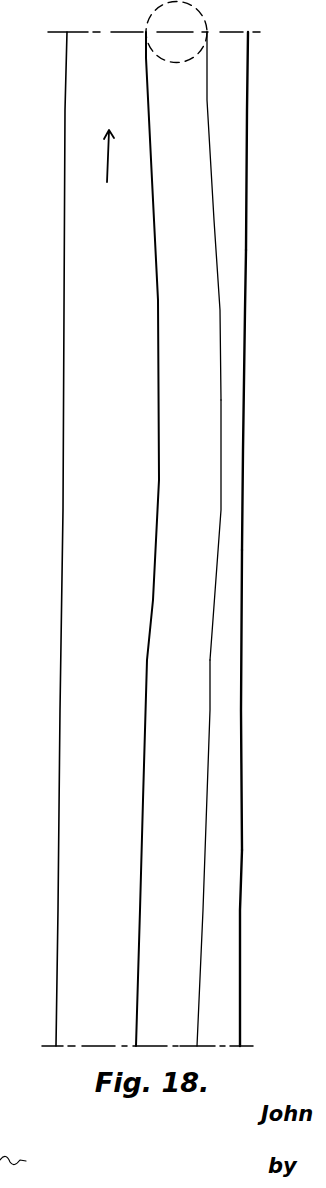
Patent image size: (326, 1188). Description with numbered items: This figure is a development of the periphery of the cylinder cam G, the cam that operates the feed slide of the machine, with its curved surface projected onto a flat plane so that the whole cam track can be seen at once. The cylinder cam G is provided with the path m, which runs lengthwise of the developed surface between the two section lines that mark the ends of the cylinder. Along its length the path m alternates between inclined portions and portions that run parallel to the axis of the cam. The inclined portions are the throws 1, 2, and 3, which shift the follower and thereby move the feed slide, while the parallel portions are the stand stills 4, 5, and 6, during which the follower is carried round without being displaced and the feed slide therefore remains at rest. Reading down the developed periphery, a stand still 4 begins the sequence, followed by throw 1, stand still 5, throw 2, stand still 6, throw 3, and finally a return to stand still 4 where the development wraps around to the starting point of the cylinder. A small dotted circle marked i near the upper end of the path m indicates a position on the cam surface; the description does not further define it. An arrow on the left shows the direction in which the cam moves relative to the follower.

The cylinder cam G is at (85, 539).
The path m is at (162, 539).
The circle i is at (176, 42).
The throw 1 is at (208, 216).
The throw 2 is at (209, 530).
The throw 3 is at (198, 853).
The stand still 4 is at (224, 539).
The stand still 5 is at (236, 400).
The stand still 6 is at (229, 700).